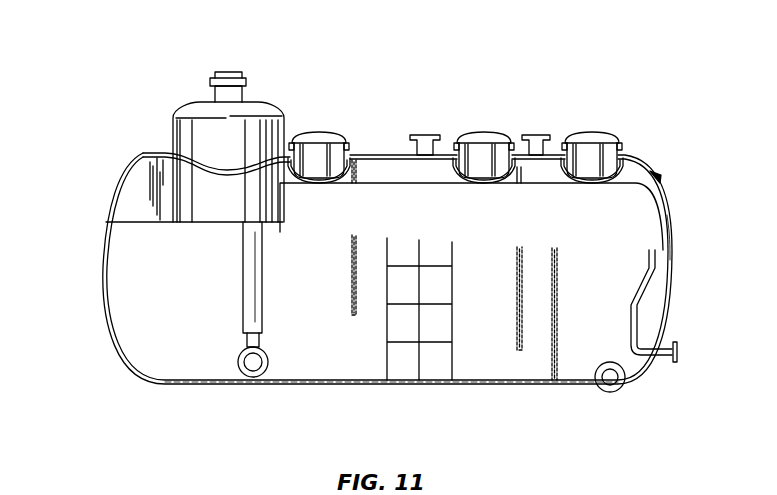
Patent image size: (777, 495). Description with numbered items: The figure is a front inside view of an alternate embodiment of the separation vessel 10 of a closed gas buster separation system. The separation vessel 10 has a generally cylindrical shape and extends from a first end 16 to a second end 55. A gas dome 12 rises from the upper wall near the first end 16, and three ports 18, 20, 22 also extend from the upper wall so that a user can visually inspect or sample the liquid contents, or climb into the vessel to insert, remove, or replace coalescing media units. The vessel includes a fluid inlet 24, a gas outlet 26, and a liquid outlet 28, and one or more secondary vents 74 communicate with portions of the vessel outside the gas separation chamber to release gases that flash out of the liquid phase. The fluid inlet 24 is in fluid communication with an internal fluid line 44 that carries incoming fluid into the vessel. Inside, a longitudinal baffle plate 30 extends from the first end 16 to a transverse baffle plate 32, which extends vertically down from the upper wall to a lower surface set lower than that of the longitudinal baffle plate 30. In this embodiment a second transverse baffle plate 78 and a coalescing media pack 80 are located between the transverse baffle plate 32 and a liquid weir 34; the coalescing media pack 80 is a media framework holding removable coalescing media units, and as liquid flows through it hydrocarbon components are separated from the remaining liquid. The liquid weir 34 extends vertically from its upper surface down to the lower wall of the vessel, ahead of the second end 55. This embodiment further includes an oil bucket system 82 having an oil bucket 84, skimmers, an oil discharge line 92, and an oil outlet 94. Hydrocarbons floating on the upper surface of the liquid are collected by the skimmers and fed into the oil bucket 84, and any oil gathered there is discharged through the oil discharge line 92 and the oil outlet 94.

The separation vessel 10 is at (120, 90).
The gas dome 12 is at (257, 100).
The first end 16 is at (104, 297).
The port 18 is at (312, 132).
The port 20 is at (478, 132).
The port 22 is at (590, 132).
The fluid inlet 24 is at (253, 362).
The gas outlet 26 is at (228, 70).
The liquid outlet 28 is at (610, 377).
The longitudinal baffle plate 30 is at (135, 187).
The transverse baffle plate 32 is at (355, 174).
The liquid weir 34 is at (557, 352).
The internal fluid line 44 is at (243, 300).
The second end 55 is at (672, 240).
The secondary vent 74 is at (425, 135).
The second transverse baffle plate 78 is at (517, 330).
The coalescing media pack 80 is at (417, 357).
The oil bucket system 82 is at (656, 177).
The oil bucket 84 is at (640, 215).
The oil discharge line 92 is at (645, 292).
The oil outlet 94 is at (678, 352).